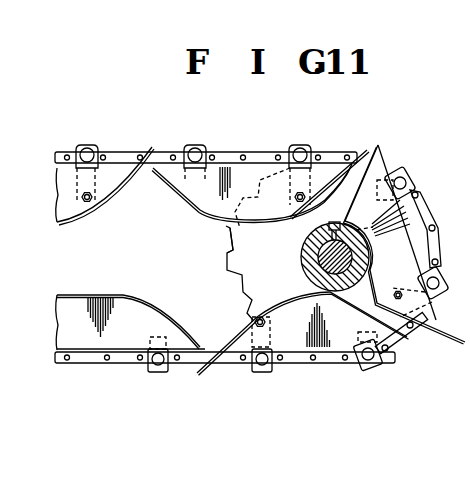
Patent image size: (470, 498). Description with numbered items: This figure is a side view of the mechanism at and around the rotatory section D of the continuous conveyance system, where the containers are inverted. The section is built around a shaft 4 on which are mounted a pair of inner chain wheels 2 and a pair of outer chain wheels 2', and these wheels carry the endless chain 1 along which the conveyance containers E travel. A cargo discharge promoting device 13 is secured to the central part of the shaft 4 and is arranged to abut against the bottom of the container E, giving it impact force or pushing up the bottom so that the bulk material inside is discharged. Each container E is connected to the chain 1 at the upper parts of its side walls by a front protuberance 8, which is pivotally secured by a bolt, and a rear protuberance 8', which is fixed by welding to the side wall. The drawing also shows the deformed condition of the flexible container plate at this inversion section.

The inner endless chain 1 is at (240, 152).
The conveyance container E is at (178, 192).
The inner chain wheel 2 is at (223, 274).
The outer chain wheel 2' is at (212, 242).
The shaft 4 is at (318, 262).
The cargo discharge promoting device 13 is at (357, 254).
The front protuberance 8 is at (429, 298).
The rear protuberance 8' is at (419, 185).